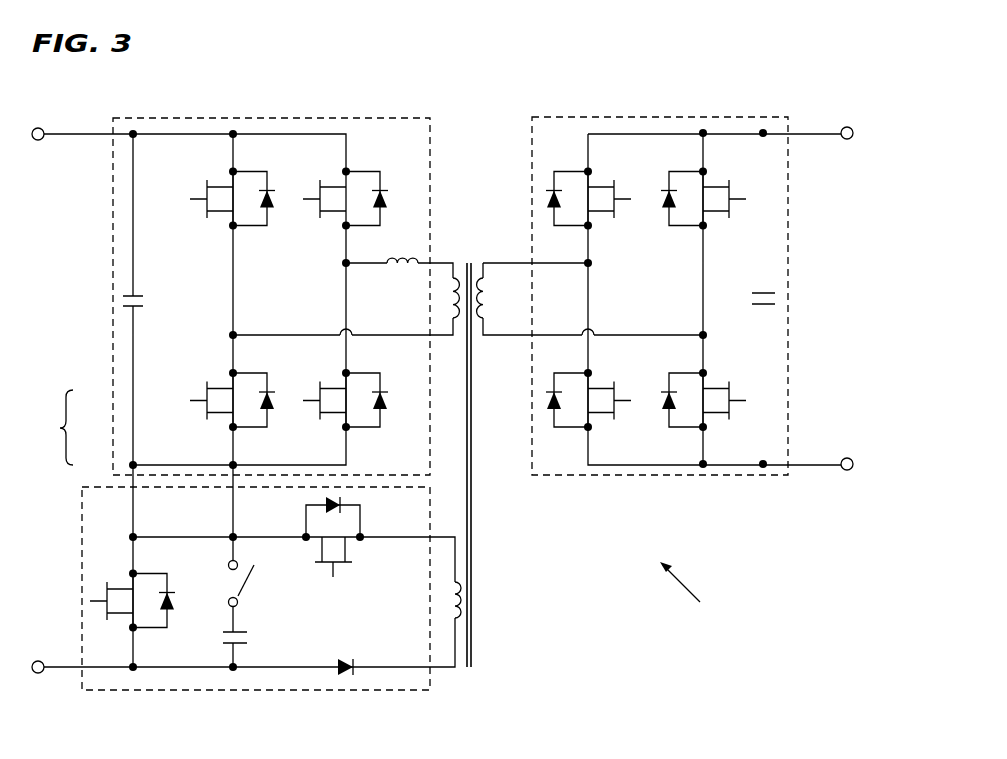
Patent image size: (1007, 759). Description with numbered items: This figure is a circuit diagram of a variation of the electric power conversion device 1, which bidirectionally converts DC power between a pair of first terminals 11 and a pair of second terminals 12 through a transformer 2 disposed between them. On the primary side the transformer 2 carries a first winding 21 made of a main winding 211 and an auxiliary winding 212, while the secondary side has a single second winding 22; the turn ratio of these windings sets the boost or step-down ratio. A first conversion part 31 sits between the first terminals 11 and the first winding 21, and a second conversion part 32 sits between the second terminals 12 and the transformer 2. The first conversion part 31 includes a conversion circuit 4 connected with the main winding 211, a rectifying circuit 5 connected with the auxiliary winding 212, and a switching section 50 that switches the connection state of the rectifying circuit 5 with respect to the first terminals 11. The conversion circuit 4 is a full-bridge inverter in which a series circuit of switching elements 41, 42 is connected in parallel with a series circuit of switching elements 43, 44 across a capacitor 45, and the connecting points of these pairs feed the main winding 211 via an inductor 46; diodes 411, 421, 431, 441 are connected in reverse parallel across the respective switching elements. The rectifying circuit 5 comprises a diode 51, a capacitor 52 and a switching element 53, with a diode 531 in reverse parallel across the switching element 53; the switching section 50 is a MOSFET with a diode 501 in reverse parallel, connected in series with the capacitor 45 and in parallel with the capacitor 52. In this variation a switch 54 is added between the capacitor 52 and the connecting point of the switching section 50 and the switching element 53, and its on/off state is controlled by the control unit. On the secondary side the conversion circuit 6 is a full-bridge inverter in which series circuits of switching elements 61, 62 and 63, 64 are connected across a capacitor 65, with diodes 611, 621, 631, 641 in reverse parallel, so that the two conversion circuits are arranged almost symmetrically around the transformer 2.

The electric power conversion device 1 is at (687, 596).
The transformer 2 is at (467, 261).
The conversion circuit 4 is at (115, 396).
The rectifying circuit 5 is at (90, 482).
The conversion circuit 6 is at (789, 268).
The first terminals 11 is at (40, 127).
The second terminals 12 is at (847, 126).
The first winding 21 is at (420, 454).
The second winding 22 is at (490, 300).
The first conversion part 31 is at (54, 427).
The second conversion part 32 is at (692, 296).
The switching element 41 is at (200, 205).
The switching element 42 is at (200, 406).
The switching element 43 is at (313, 213).
The switching element 44 is at (315, 418).
The capacitor 45 is at (147, 301).
The inductor 46 is at (410, 250).
The switching section 50 is at (103, 591).
The diode 51 is at (345, 657).
The capacitor 52 is at (222, 637).
The switching element 53 is at (325, 566).
The switch 54 is at (252, 590).
The switching element 61 is at (737, 188).
The switching element 62 is at (735, 406).
The switching element 63 is at (622, 190).
The switching element 64 is at (620, 407).
The capacitor 65 is at (748, 300).
The main winding 211 is at (448, 300).
The auxiliary winding 212 is at (450, 594).
The diode 411 is at (275, 183).
The diode 421 is at (277, 386).
The diode 431 is at (385, 188).
The diode 441 is at (385, 391).
The diode 501 is at (172, 587).
The diode 531 is at (300, 500).
The diode 611 is at (660, 215).
The diode 621 is at (662, 380).
The diode 631 is at (549, 178).
The diode 641 is at (552, 419).